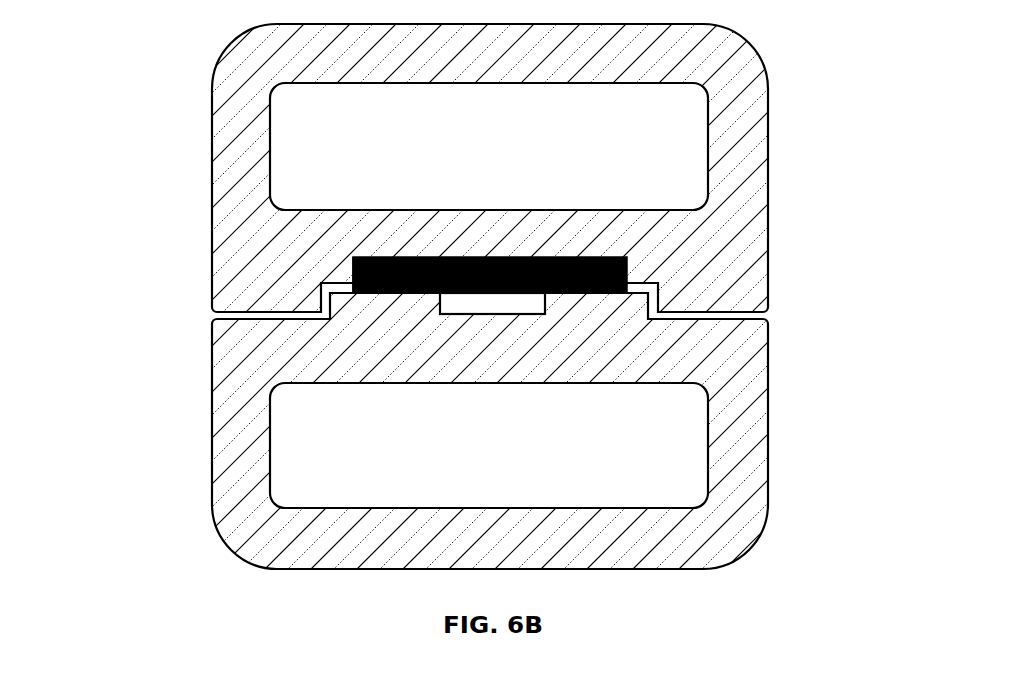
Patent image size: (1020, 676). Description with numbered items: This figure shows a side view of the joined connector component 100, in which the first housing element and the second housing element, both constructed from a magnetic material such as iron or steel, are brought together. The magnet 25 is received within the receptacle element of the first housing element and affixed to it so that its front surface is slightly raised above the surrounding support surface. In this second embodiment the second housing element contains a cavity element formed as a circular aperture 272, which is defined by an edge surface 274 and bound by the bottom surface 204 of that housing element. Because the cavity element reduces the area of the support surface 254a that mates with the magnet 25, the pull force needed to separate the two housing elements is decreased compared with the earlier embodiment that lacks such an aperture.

The connector component 100 is at (116, 98).
The magnet 25 is at (628, 259).
The support surface 254a is at (350, 276).
The edge surface 274 is at (550, 300).
The circular aperture 272 is at (470, 298).
The bottom surface 204 is at (517, 314).